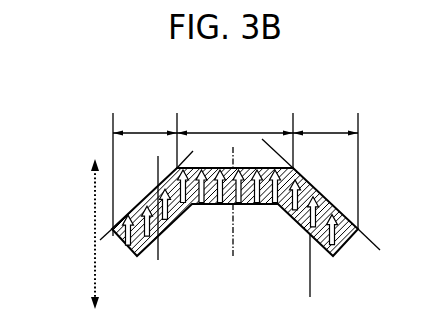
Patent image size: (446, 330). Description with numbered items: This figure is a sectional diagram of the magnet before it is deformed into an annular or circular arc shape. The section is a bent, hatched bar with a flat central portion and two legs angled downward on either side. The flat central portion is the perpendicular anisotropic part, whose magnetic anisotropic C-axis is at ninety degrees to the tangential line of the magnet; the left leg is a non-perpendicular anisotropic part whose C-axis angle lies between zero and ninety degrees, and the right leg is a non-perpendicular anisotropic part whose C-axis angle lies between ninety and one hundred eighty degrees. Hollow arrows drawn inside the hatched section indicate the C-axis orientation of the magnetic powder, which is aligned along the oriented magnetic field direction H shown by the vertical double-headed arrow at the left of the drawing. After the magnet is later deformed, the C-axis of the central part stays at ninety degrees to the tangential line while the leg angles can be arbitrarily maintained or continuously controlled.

The oriented magnetic field direction H is at (54, 234).